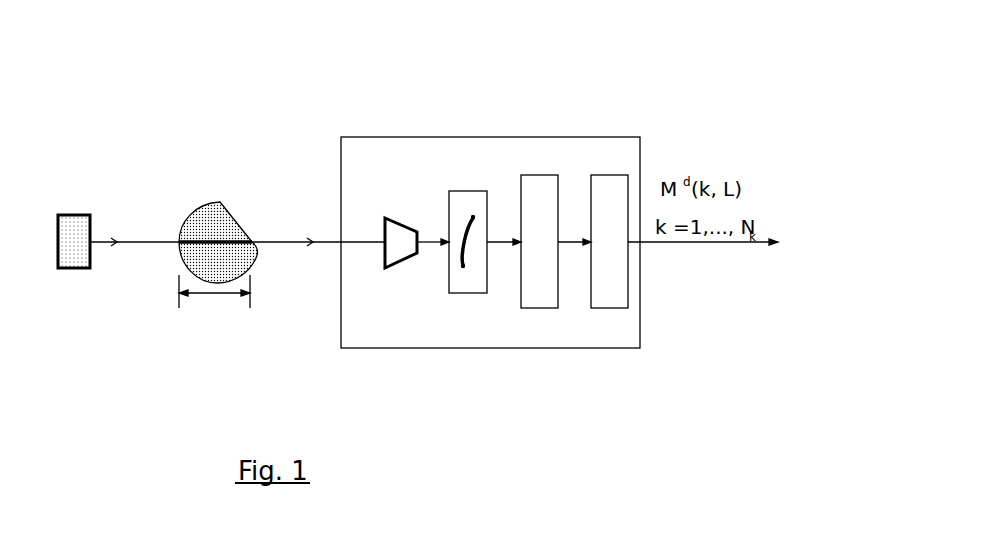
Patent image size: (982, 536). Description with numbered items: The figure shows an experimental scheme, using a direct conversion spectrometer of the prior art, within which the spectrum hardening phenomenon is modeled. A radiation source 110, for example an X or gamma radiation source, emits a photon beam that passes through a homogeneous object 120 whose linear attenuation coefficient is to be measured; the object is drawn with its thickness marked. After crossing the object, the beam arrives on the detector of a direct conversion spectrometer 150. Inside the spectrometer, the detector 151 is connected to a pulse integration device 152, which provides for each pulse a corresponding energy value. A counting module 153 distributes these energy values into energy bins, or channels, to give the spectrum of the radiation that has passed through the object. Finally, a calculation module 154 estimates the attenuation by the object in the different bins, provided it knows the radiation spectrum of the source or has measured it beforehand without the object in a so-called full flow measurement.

The radiation source 110 is at (70, 215).
The homogeneous object 120 is at (212, 203).
The direct conversion spectrometer 150 is at (513, 136).
The detector 151 is at (395, 218).
The pulse integration device 152 is at (472, 293).
The counting module 153 is at (540, 308).
The calculation module 154 is at (610, 308).